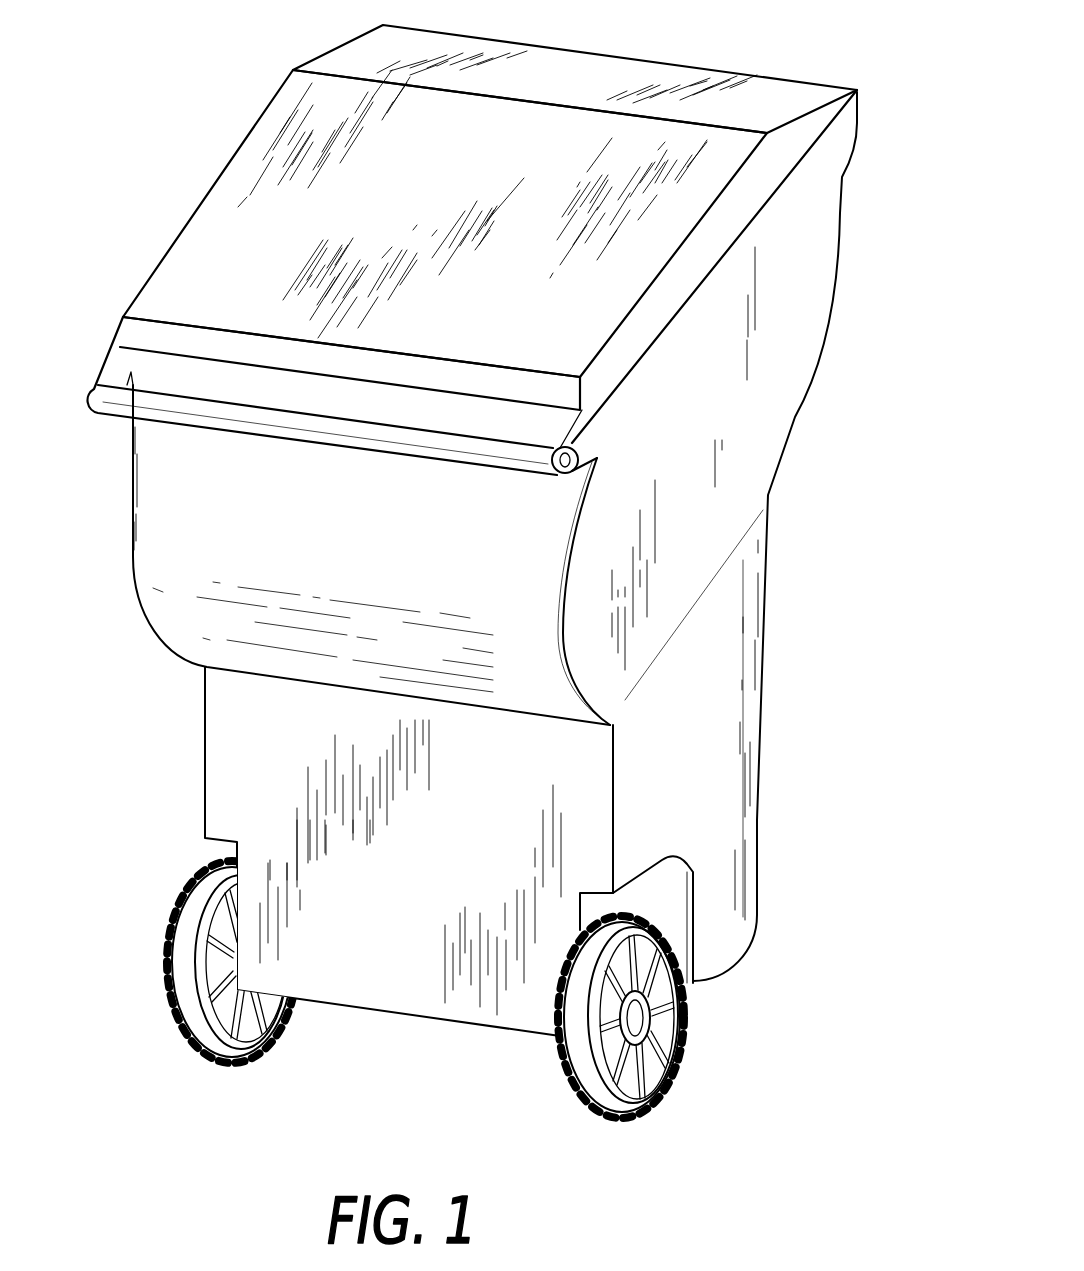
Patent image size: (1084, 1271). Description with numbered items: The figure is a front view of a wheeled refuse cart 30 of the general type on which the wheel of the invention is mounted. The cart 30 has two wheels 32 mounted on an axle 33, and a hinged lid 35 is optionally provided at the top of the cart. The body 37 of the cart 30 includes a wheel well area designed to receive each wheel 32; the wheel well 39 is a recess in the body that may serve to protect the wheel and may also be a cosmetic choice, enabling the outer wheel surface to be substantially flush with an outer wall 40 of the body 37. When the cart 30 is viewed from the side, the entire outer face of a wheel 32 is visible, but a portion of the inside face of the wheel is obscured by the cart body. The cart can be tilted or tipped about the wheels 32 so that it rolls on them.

The cart 30 is at (822, 433).
The wheels 32 is at (703, 1050).
The axle 33 is at (637, 1017).
The hinged lid 35 is at (225, 222).
The body 37 is at (747, 653).
The wheel well 39 is at (660, 883).
The outer wall 40 is at (710, 780).